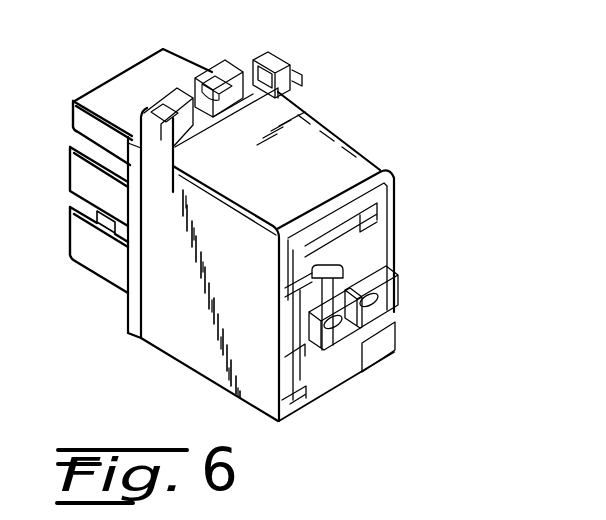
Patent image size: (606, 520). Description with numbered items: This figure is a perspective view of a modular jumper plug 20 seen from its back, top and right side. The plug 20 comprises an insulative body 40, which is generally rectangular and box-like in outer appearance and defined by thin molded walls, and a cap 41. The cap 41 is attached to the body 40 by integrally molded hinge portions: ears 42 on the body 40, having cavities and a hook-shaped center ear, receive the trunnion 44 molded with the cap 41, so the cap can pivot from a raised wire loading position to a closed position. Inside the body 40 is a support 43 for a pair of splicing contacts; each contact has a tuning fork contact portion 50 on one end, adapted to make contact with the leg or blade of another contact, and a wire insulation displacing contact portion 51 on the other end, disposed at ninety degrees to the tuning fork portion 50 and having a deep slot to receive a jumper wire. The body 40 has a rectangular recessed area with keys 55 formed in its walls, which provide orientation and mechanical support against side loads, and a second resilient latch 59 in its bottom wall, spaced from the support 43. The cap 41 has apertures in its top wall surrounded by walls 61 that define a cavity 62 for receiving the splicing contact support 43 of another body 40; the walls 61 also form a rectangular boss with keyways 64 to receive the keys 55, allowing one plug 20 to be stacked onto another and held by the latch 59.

The modular jumper plug 20 is at (172, 391).
The insulative body 40 is at (346, 120).
The cap 41 is at (178, 38).
The ears 42 is at (288, 52).
The trunnion 44 is at (303, 72).
The keys 55 is at (382, 194).
The support 43 is at (296, 318).
The wire insulation displacing contact portion 51 is at (345, 355).
The second resilient latch 59 is at (318, 368).
The walls 61 is at (68, 246).
The cavity 62 is at (103, 215).
The keyways 64 is at (76, 148).
The tuning fork contact portion 50 is at (64, 166).